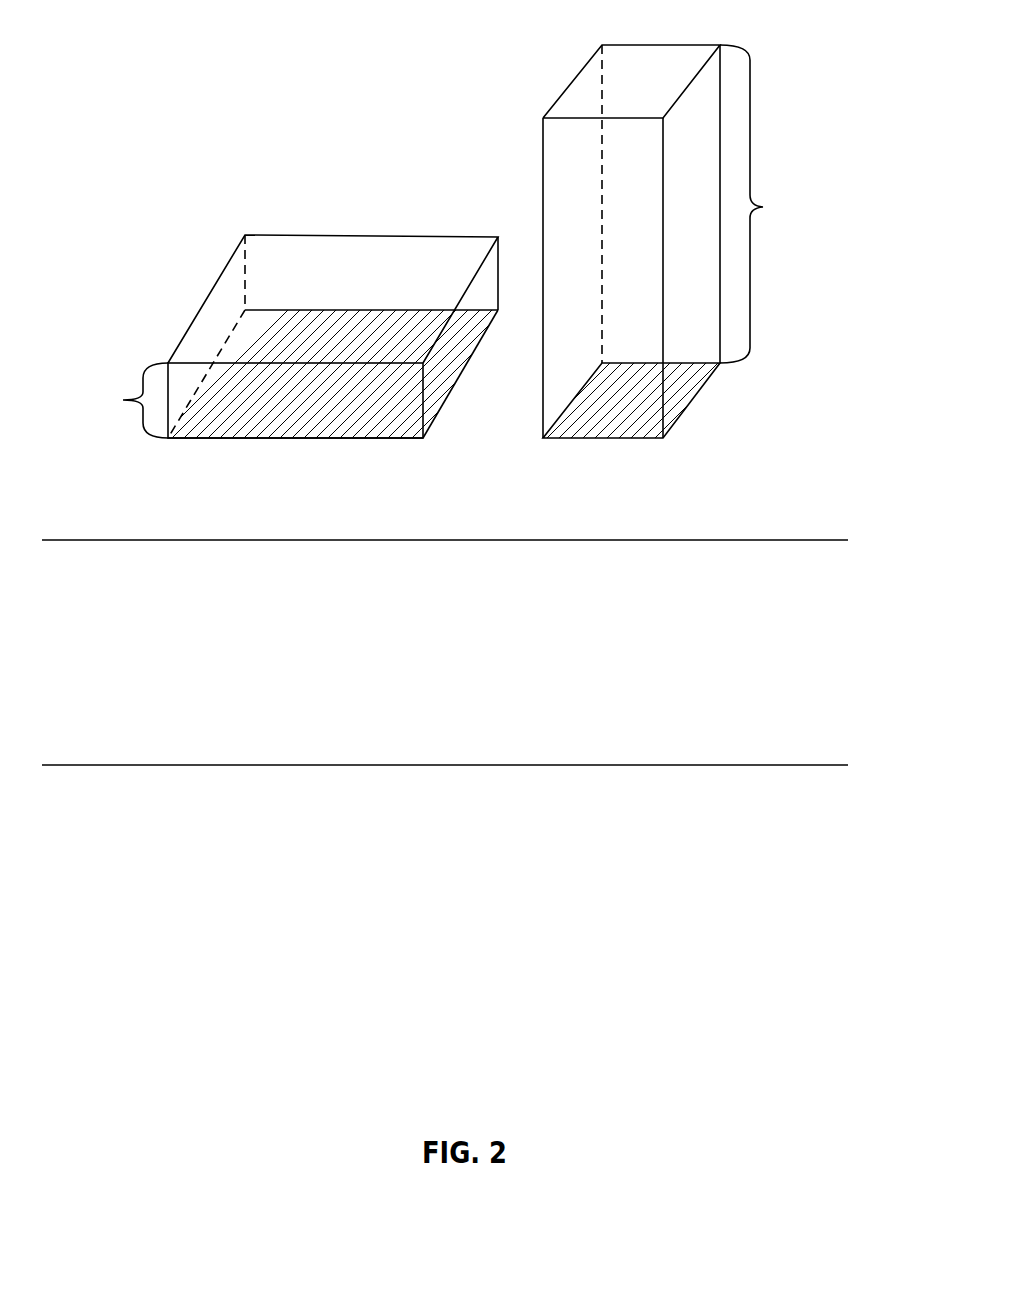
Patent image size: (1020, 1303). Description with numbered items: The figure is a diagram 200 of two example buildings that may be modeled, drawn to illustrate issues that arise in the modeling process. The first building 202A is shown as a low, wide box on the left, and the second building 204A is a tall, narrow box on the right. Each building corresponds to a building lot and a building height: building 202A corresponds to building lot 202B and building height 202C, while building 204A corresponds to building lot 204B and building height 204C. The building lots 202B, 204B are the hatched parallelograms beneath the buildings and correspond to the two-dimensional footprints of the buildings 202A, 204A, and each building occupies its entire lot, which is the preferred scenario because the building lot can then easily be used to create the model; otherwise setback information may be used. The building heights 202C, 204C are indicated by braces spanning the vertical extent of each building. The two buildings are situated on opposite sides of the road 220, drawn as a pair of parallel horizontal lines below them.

The diagram 200 is at (110, 84).
The building 202A is at (267, 235).
The building lot 202B is at (300, 420).
The building height 202C is at (105, 400).
The building 204A is at (542, 170).
The building lot 204B is at (677, 395).
The building height 204C is at (783, 204).
The road 220 is at (717, 723).